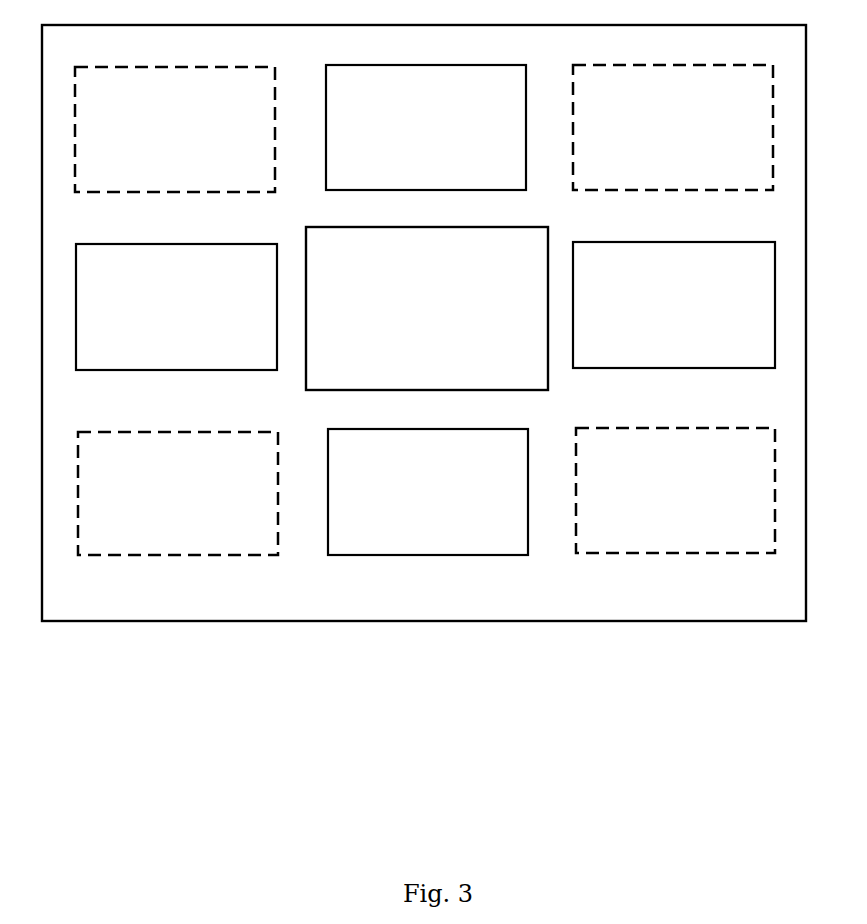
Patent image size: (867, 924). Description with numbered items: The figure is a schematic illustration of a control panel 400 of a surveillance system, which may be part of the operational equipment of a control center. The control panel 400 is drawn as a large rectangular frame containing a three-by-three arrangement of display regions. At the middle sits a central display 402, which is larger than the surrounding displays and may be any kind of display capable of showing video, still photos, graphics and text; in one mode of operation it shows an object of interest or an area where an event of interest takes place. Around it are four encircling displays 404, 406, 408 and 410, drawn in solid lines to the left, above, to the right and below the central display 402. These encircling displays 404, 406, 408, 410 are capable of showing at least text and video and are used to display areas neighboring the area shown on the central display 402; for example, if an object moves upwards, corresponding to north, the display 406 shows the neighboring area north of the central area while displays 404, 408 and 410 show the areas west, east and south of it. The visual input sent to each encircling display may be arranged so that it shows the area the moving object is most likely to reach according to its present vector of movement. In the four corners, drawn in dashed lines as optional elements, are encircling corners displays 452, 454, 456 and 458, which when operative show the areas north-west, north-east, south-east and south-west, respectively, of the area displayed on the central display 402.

The control panel 400 is at (590, 630).
The central display 402 is at (410, 312).
The encircling display 404 is at (159, 304).
The encircling display 406 is at (408, 124).
The encircling display 408 is at (656, 302).
The encircling display 410 is at (411, 489).
The encircling corners display 452 is at (157, 126).
The encircling corners display 454 is at (655, 122).
The encircling corners display 456 is at (658, 487).
The encircling corners display 458 is at (160, 491).